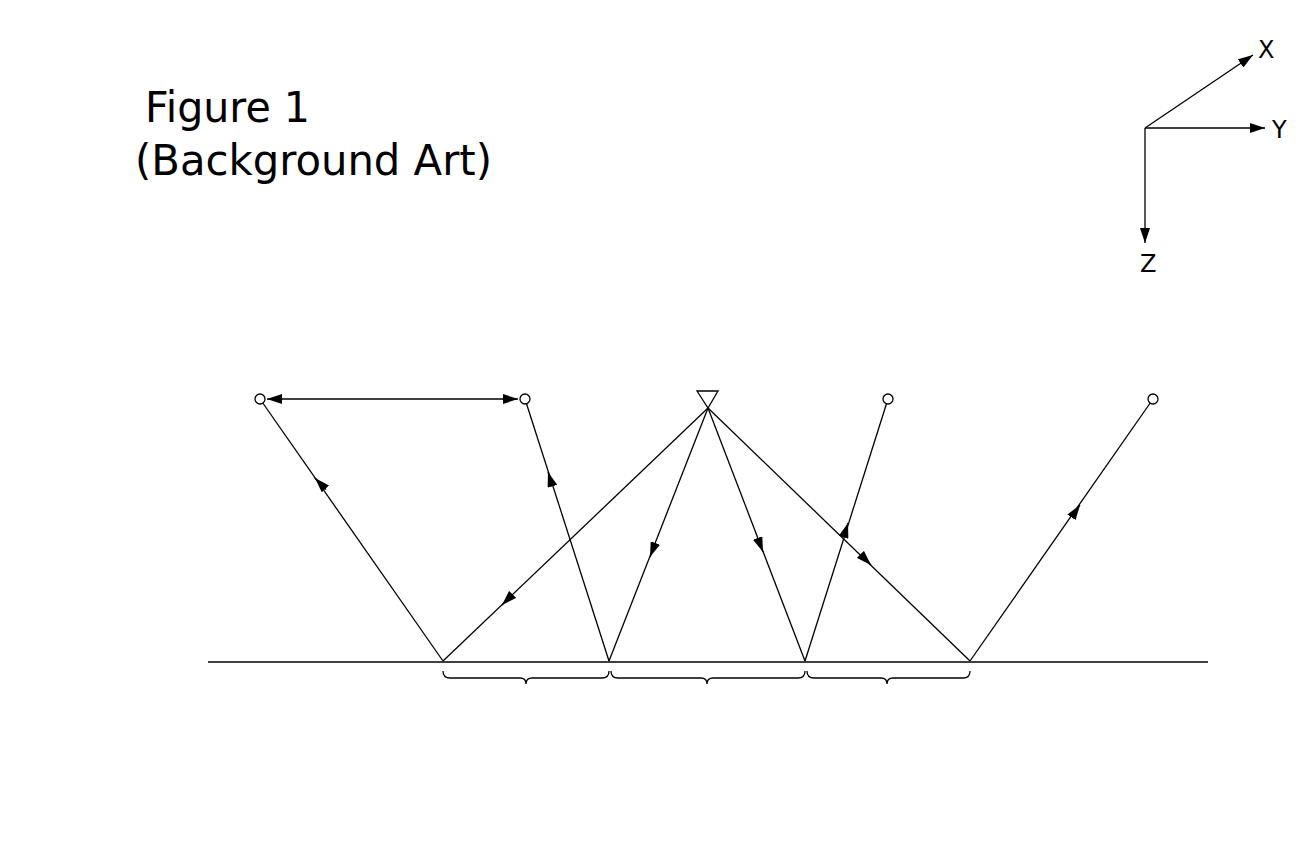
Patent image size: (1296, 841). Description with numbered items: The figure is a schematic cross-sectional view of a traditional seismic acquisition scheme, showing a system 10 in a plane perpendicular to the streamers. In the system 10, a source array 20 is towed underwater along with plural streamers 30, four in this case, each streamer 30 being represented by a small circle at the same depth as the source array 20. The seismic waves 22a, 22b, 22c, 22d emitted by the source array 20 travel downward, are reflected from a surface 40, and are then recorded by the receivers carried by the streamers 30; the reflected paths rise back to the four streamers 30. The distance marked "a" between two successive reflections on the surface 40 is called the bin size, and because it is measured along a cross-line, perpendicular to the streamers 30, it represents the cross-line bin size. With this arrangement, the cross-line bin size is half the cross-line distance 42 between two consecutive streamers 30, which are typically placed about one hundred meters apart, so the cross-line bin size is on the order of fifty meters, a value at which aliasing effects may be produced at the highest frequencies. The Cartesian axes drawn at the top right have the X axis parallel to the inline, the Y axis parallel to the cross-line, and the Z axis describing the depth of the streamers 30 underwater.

The system 10 is at (727, 227).
The source array 20 is at (705, 390).
The seismic wave 22a is at (668, 446).
The seismic wave 22b is at (672, 502).
The seismic wave 22c is at (737, 470).
The seismic wave 22d is at (735, 428).
The streamer 30 is at (262, 393).
The surface 40 is at (1076, 662).
The cross-line distance 42 is at (385, 399).